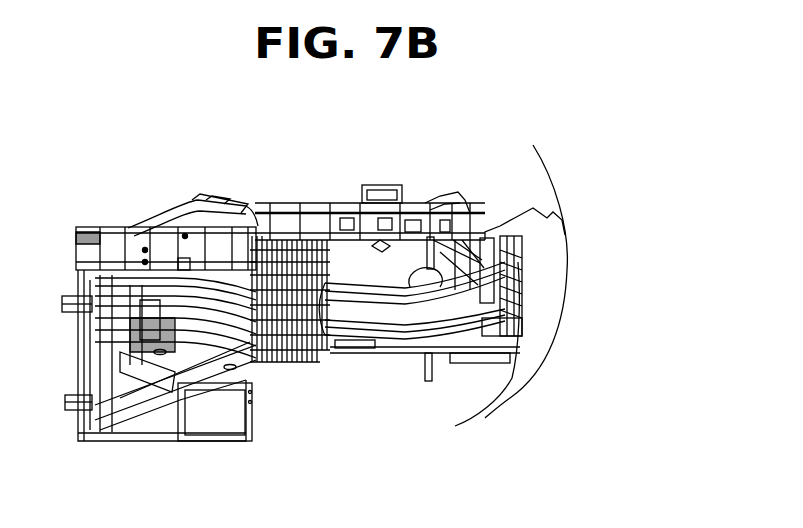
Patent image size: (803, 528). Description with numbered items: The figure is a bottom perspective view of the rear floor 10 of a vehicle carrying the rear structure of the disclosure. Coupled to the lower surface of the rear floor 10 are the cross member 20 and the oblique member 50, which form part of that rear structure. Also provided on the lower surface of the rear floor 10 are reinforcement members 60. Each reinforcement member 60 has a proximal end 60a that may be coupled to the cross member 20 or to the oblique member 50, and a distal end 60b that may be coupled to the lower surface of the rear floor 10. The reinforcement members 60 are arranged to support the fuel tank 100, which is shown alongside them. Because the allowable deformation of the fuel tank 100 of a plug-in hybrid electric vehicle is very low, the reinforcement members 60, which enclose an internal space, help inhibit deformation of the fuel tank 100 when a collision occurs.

The rear floor 10 is at (310, 362).
The cross member 20 is at (520, 312).
The oblique member 50 is at (432, 240).
The reinforcement member 60 is at (335, 222).
The proximal end 60a is at (515, 283).
The distal end 60b is at (302, 222).
The fuel tank 100 is at (415, 322).